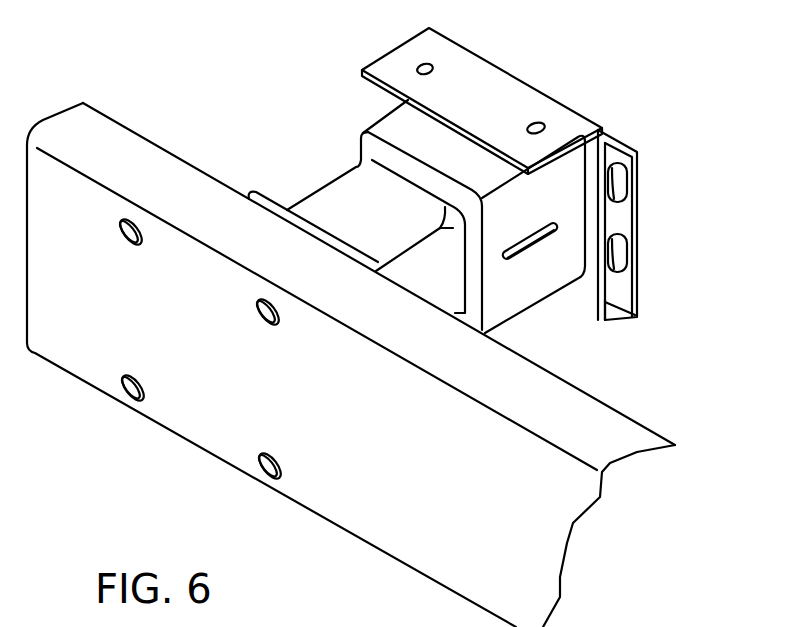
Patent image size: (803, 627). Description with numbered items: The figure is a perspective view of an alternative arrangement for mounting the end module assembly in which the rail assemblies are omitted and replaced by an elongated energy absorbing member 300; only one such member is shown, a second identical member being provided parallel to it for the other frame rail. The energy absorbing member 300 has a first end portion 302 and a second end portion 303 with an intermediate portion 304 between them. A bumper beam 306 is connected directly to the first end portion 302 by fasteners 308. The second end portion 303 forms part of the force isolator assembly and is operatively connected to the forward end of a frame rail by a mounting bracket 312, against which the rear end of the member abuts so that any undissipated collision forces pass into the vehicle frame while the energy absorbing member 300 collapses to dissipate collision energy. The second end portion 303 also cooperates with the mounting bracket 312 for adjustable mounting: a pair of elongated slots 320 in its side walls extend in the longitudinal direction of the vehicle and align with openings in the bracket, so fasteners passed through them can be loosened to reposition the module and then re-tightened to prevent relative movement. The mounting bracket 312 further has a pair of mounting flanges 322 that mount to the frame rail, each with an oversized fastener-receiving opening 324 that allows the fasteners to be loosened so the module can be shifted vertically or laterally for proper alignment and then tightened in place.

The energy absorbing member 300 is at (302, 153).
The first end portion 302 is at (262, 203).
The second end portion 303 is at (440, 142).
The intermediate portion 304 is at (350, 198).
The bumper beam 306 is at (222, 415).
The fasteners 308 is at (127, 218).
The mounting bracket 312 is at (622, 138).
The elongated slots 320 is at (527, 253).
The mounting flanges 322 is at (586, 290).
The oversized fastener-receiving openings 324 is at (622, 255).